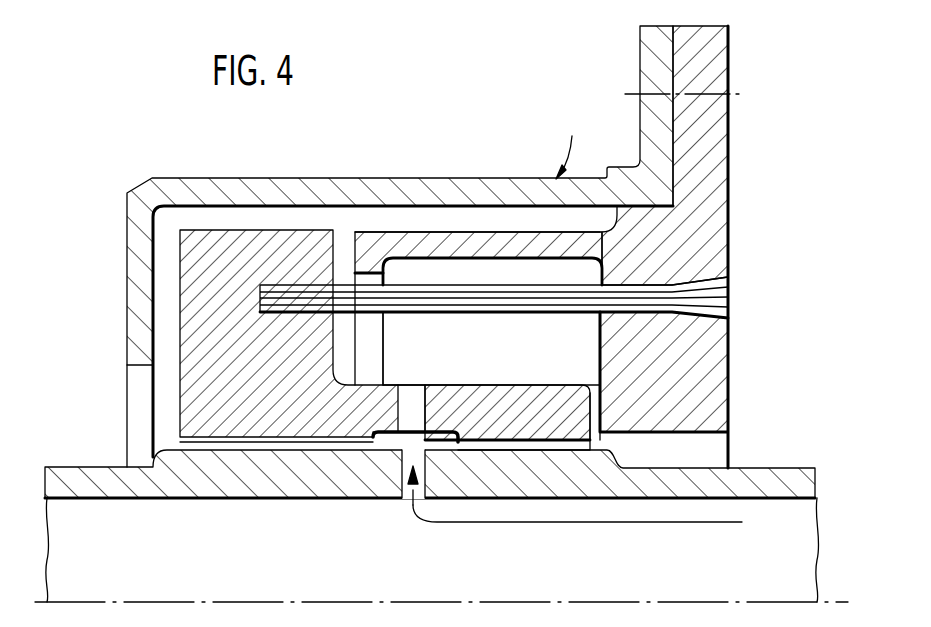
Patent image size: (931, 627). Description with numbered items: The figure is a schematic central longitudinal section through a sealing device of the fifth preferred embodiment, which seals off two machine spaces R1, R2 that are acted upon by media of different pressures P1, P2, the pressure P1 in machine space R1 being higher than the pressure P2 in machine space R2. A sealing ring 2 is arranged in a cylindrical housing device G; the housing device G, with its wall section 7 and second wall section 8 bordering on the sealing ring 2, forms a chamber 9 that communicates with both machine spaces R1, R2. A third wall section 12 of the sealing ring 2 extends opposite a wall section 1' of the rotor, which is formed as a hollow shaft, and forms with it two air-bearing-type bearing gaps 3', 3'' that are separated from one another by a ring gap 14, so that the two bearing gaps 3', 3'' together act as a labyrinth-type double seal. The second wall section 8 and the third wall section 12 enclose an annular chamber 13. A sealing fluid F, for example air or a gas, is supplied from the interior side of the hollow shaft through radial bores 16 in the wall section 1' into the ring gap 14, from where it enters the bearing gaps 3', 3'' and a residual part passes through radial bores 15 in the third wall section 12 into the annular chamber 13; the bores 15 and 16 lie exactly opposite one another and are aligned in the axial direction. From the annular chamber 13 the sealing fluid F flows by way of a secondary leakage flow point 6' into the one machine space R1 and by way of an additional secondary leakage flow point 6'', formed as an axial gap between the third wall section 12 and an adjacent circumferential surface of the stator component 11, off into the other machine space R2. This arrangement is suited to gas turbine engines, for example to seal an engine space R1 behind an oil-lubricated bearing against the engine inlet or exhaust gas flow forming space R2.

The wall section of the rotor 1' is at (430, 500).
The sealing ring 2 is at (217, 256).
The air-bearing-type bearing gap 3' is at (276, 497).
The air-bearing-type bearing gap 3'' is at (524, 393).
The secondary leakage flow point 6' is at (356, 259).
The additional secondary leakage flow point 6'' is at (579, 376).
The wall section 7 is at (418, 195).
The second wall section 8 is at (459, 243).
The chamber 9 is at (535, 218).
The stator component 11 is at (714, 232).
The third wall section 12 is at (483, 410).
The annular chamber 13 is at (503, 328).
The ring gap 14 is at (447, 437).
The radial bores 15 is at (412, 405).
The radial bores 16 is at (403, 462).
The sealing fluid supply F is at (546, 524).
The housing device G is at (567, 145).
The machine space R1 is at (90, 285).
The machine space R2 is at (803, 280).
The pressure P1 is at (90, 447).
The pressure P2 is at (802, 427).